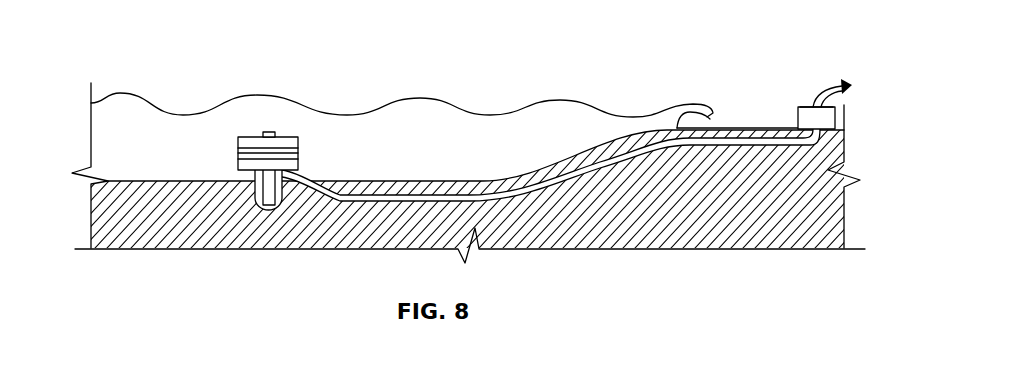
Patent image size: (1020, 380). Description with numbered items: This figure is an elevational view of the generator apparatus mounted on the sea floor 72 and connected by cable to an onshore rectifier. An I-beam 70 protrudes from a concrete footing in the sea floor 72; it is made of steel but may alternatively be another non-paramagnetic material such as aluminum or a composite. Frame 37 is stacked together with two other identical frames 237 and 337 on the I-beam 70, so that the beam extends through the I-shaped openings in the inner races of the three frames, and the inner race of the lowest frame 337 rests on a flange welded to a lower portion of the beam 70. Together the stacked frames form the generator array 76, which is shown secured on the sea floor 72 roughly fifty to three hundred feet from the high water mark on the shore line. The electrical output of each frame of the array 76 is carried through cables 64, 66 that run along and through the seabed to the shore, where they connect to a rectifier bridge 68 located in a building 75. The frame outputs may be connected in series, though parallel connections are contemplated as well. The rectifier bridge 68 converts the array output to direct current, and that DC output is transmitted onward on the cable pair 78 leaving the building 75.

The frame 37 is at (252, 137).
The I-beam 70 is at (270, 132).
The sea floor 72 is at (343, 236).
The generator array 76 is at (272, 135).
The frame 237 is at (300, 152).
The frame 337 is at (246, 173).
The cable 64 is at (551, 162).
The cable 66 is at (432, 194).
The rectifier bridge 68 is at (800, 125).
The building 75 is at (812, 107).
The cable pair 78 is at (827, 88).